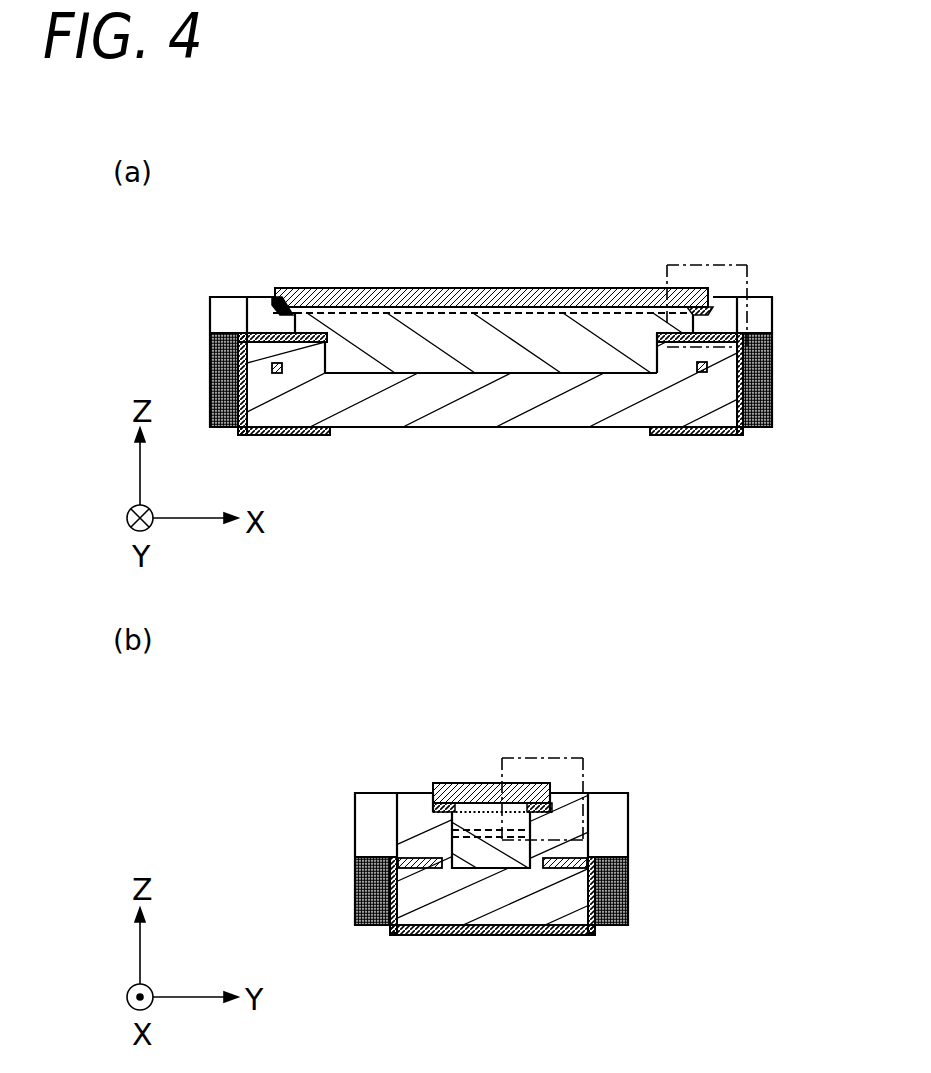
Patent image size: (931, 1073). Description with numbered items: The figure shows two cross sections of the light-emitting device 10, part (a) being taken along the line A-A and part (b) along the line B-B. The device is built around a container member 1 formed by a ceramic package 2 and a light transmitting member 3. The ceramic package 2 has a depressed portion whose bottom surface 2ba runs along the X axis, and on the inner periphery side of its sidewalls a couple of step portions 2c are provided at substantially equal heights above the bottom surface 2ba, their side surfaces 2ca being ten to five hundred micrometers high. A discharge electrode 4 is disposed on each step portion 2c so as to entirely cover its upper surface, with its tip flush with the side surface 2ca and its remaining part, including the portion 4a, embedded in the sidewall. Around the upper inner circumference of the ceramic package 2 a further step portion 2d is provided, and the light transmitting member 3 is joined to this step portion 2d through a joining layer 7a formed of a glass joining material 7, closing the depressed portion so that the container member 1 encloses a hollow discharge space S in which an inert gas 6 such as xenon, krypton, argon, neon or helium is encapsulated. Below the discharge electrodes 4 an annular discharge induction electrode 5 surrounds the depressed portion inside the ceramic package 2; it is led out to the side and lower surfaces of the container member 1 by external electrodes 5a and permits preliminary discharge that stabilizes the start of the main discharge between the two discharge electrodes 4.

The light-emitting device 10 is at (580, 221).
The container member 1 is at (812, 232).
The ceramic package 2 is at (707, 332).
The bottom surface 2ba is at (447, 375).
The step portion 2c is at (330, 345).
The side surface 2ca is at (340, 337).
The step portion 2d is at (273, 293).
The light transmitting member 3 is at (703, 287).
The discharge electrode 4 is at (747, 347).
The external electrode portion 4a is at (748, 410).
The discharge induction electrode 5 is at (700, 372).
The external electrode 5a is at (607, 907).
The inert gas 6 is at (370, 320).
The joining material 7 is at (480, 520).
The joining layer 7a is at (275, 307).
The discharge space S is at (446, 318).
The section line A- A is at (703, 265).
The section line B- B is at (577, 755).